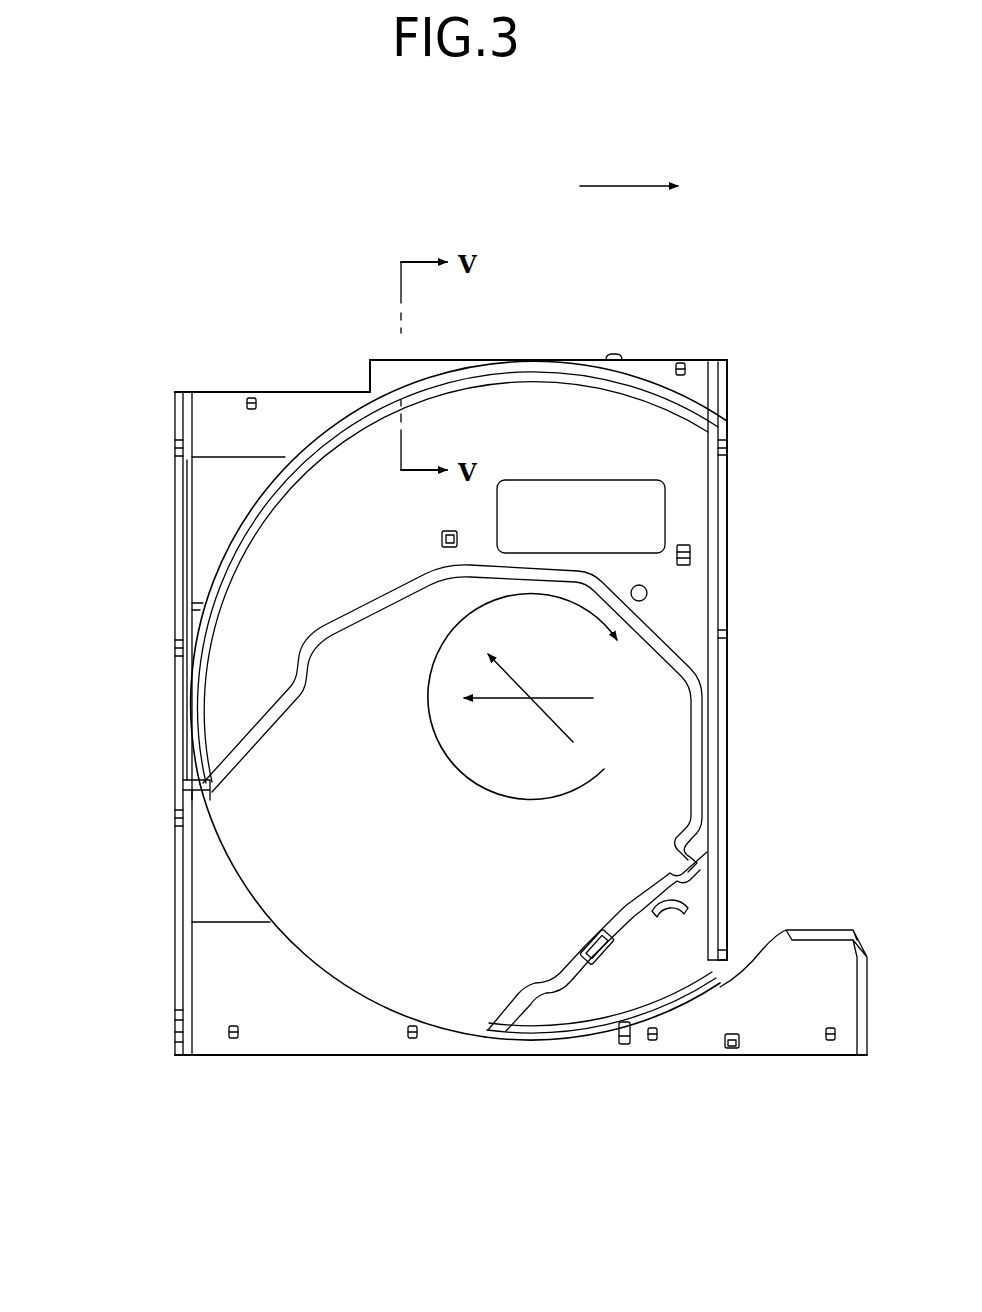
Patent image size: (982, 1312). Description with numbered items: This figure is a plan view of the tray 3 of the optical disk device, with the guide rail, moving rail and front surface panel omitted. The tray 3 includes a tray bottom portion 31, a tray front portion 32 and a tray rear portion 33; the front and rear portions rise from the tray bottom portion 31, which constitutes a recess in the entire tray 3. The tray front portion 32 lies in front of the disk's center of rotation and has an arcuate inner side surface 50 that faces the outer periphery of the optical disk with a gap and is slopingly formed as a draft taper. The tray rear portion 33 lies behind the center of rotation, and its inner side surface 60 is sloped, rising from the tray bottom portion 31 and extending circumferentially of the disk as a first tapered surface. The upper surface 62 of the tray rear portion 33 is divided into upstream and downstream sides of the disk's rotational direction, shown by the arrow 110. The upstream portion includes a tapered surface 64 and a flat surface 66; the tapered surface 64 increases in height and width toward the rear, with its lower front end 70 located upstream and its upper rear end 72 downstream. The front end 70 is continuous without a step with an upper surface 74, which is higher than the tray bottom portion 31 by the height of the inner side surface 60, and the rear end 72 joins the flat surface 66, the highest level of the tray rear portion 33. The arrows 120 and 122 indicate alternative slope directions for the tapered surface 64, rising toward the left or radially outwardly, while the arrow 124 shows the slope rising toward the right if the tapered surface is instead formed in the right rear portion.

The tray 3 is at (480, 1074).
The tray bottom portion 31 is at (545, 390).
The tray front portion 32 is at (308, 1022).
The tray rear portion 33 is at (293, 410).
The inner side surface 50 is at (362, 992).
The inner side surface 60 is at (648, 378).
The upper surface 62 is at (697, 370).
The tapered surface 64 is at (210, 530).
The flat surface 66 is at (218, 405).
The front end 70 is at (193, 603).
The rear end 72 is at (210, 483).
The upper surface 74 is at (190, 775).
The arrow 110 is at (505, 800).
The arrow 120 is at (495, 700).
The arrow 122 is at (520, 676).
The arrow 124 is at (615, 185).